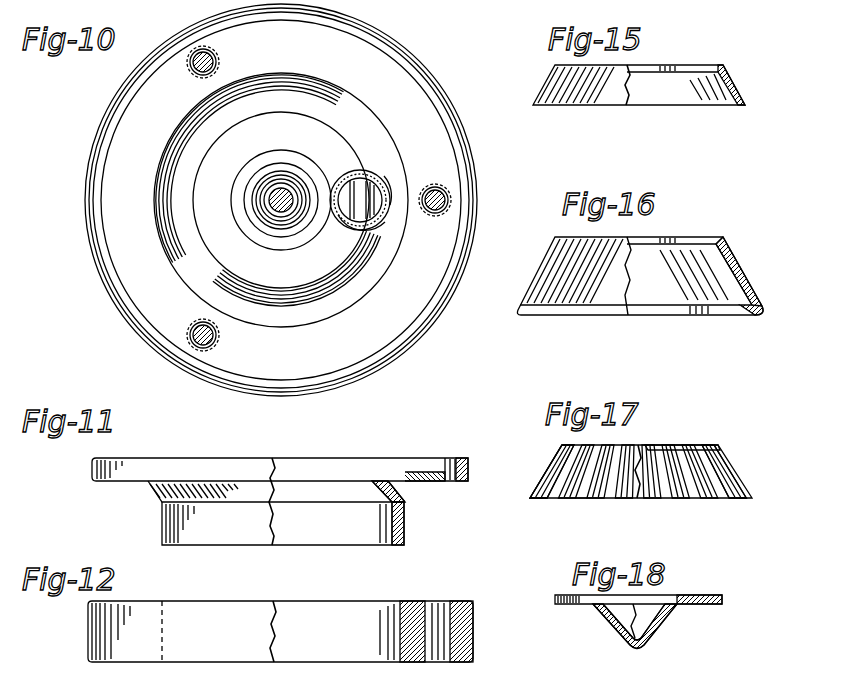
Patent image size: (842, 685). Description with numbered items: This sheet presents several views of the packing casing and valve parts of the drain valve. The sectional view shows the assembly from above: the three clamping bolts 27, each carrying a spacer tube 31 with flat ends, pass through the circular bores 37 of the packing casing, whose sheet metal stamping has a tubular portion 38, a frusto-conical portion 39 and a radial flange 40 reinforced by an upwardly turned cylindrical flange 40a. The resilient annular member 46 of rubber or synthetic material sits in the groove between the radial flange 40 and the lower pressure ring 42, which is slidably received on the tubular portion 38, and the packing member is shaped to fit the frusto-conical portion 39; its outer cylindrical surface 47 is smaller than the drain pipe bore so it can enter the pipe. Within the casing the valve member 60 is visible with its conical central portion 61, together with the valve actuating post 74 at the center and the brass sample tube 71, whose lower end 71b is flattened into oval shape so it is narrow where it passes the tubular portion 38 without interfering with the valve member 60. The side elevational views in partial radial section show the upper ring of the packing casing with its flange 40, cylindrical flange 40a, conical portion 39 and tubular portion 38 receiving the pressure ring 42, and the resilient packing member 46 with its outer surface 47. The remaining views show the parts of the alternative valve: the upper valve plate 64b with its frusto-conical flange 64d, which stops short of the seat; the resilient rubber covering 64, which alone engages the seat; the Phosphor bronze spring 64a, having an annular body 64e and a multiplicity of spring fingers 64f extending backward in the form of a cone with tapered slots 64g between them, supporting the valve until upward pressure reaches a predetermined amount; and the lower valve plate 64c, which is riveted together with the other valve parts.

In FIG. 10, the clamping bolt 27 is at (212, 54).
In FIG. 10, the spacer tube 31 is at (218, 66).
In FIG. 11, the circular bore 37 is at (440, 483).
In FIG. 10, the tubular portion 38 is at (197, 125).
In FIG. 11, the tubular portion 38 is at (386, 541).
In FIG. 10, the frusto-conical portion 39 is at (304, 320).
In FIG. 11, the frusto-conical portion 39 is at (405, 490).
In FIG. 10, the radial flange 40 is at (420, 310).
In FIG. 11, the radial flange 40 is at (418, 466).
In FIG. 10, the cylindrical flange 40a is at (398, 348).
In FIG. 11, the cylindrical flange 40a is at (470, 452).
In FIG. 11, the lower pressure ring 42 is at (404, 522).
In FIG. 10, the resilient annular member 46 is at (337, 393).
In FIG. 12, the resilient annular member 46 is at (280, 603).
In FIG. 12, the outer cylindrical surface 47 is at (475, 625).
In FIG. 10, the valve member 60 is at (347, 128).
In FIG. 18, the conical central portion 61 is at (605, 622).
In FIG. 16, the resilient rubber covering 64 is at (740, 280).
In FIG. 17, the Phosphor bronze spring 64a is at (736, 460).
In FIG. 15, the upper valve plate 64b is at (726, 72).
In FIG. 18, the lower valve plate 64c is at (722, 600).
In FIG. 15, the frusto-conical flange 64d is at (742, 100).
In FIG. 17, the annular body 64e is at (672, 447).
In FIG. 17, the spring finger 64f is at (548, 470).
In FIG. 17, the tapered slot 64g is at (572, 500).
In FIG. 10, the sample tube 71 is at (344, 176).
In FIG. 10, the lower end 71b is at (382, 180).
In FIG. 10, the valve actuating post 74 is at (277, 210).